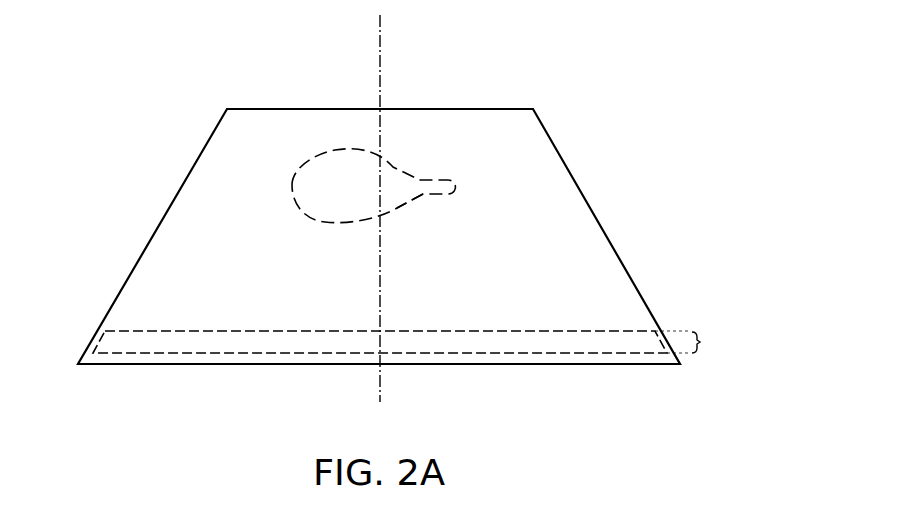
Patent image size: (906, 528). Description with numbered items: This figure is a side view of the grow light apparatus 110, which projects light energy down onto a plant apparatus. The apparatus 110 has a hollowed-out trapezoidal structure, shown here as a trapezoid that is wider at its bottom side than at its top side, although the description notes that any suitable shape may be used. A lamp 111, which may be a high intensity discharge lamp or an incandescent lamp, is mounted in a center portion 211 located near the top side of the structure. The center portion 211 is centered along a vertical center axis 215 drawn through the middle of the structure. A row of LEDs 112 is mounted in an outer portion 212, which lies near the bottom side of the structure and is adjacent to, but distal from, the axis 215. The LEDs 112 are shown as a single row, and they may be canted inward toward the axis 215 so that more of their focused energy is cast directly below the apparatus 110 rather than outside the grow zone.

The grow light apparatus 110 is at (608, 237).
The lamp 111 is at (398, 208).
The LEDs 112 is at (603, 353).
The center portion 211 is at (338, 134).
The outer portion 212 is at (700, 342).
The axis 215 is at (380, 62).